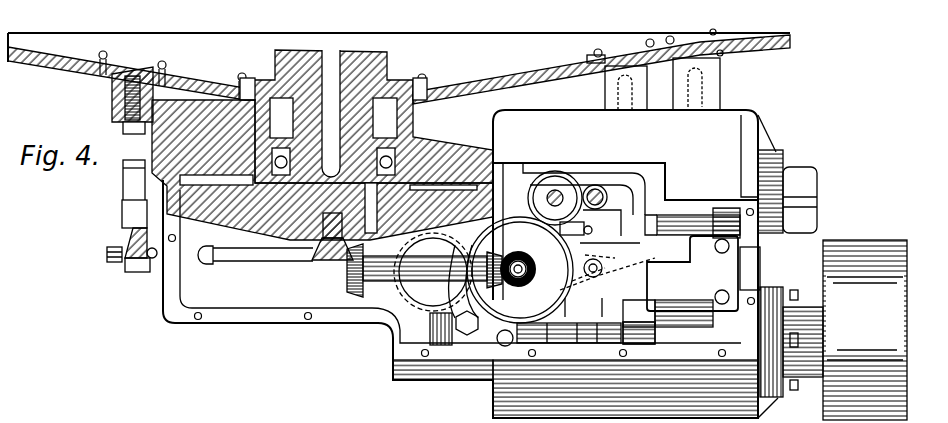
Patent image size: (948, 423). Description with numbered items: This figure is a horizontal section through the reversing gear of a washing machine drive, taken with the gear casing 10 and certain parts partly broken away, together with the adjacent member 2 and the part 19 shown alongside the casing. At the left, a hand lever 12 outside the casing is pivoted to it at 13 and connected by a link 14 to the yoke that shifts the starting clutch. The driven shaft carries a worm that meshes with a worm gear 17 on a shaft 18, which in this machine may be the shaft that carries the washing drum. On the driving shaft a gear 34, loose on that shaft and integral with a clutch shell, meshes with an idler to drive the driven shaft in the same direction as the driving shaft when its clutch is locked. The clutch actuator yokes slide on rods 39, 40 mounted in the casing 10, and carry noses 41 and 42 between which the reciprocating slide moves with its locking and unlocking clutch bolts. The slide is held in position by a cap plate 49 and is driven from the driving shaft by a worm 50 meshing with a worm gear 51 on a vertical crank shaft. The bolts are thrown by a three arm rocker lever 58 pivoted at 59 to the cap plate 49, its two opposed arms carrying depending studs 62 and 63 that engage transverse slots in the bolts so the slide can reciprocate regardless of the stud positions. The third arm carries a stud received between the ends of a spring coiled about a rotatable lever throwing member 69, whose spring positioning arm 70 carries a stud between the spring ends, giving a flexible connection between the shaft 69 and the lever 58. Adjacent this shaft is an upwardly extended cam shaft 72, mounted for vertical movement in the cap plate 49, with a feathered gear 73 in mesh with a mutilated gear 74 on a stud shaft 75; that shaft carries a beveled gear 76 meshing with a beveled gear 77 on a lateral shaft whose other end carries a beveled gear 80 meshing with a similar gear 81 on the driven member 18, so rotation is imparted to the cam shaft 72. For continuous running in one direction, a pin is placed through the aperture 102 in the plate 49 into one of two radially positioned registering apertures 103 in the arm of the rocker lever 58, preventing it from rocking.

The motor 2 is at (900, 312).
The gear casing 10 is at (275, 320).
The hand lever 12 is at (152, 266).
The pivot 13 is at (133, 267).
The link 14 is at (265, 258).
The worm gear 17 is at (232, 212).
The shaft 18 is at (360, 123).
The shaft 19 is at (640, 342).
The gear 34 is at (533, 338).
The rod 39 is at (639, 333).
The rod 40 is at (693, 228).
The nose 41 is at (592, 226).
The nose 42 is at (639, 312).
The cap plate 49 is at (720, 261).
The worm 50 is at (441, 345).
The worm gear 51 is at (420, 288).
The three arm lever 58 is at (606, 256).
The pivot 59 is at (601, 274).
The depending stud 62 is at (571, 281).
The depending stud 63 is at (636, 262).
The lever throwing member 69 is at (595, 190).
The spring positioning arm 70 is at (607, 217).
The cam shaft 72 is at (555, 190).
The gear 73 is at (535, 200).
The mutilated gear 74 is at (513, 222).
The stud shaft 75 is at (523, 256).
The beveled gear 76 is at (535, 265).
The beveled gear 77 is at (495, 257).
The beveled gear 80 is at (347, 270).
The beveled gear 81 is at (321, 260).
The aperture 102 is at (598, 243).
The registering aperture 103 is at (575, 227).